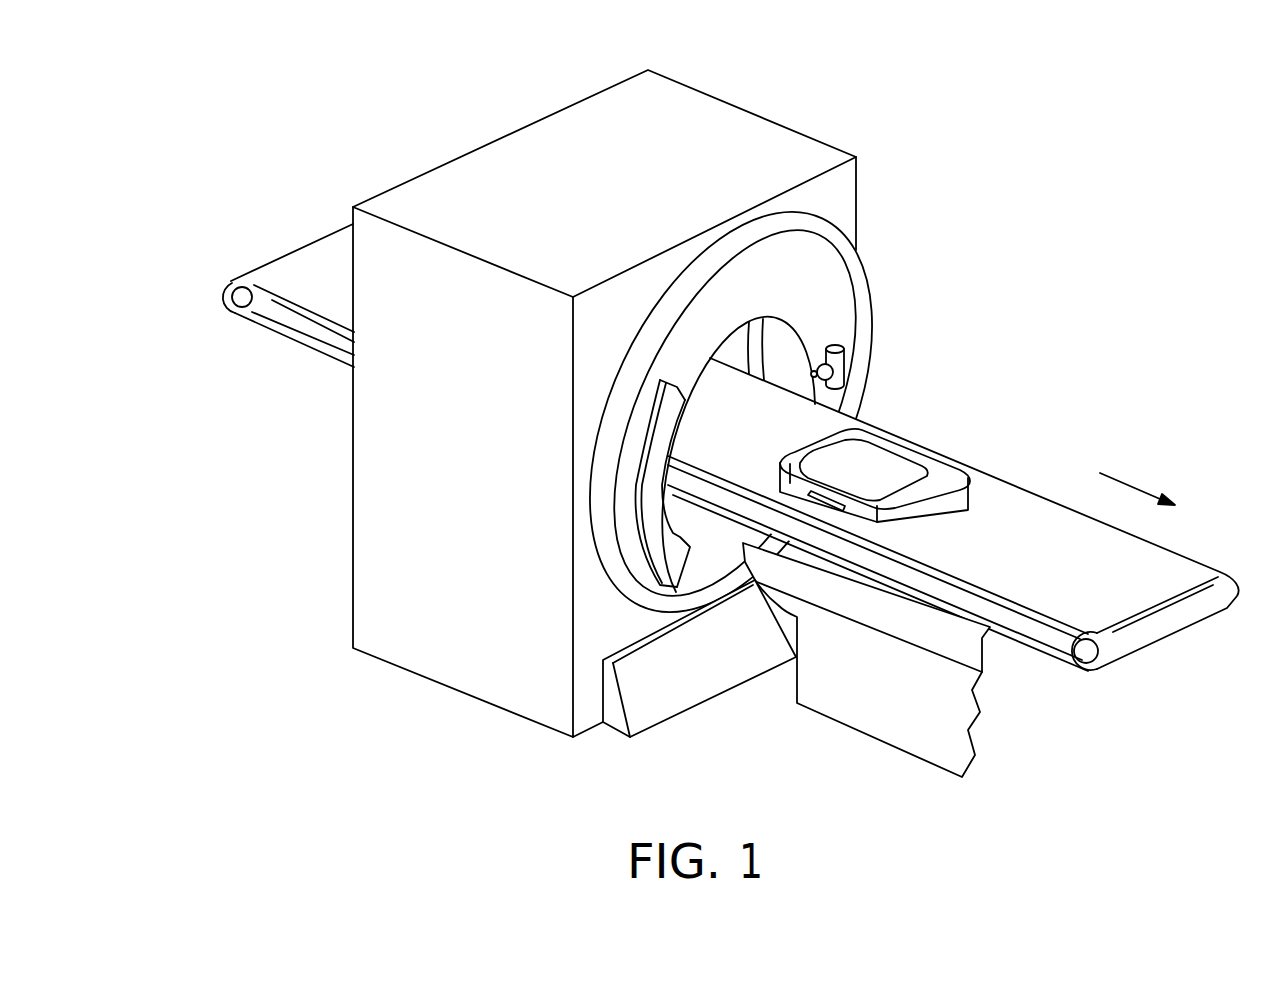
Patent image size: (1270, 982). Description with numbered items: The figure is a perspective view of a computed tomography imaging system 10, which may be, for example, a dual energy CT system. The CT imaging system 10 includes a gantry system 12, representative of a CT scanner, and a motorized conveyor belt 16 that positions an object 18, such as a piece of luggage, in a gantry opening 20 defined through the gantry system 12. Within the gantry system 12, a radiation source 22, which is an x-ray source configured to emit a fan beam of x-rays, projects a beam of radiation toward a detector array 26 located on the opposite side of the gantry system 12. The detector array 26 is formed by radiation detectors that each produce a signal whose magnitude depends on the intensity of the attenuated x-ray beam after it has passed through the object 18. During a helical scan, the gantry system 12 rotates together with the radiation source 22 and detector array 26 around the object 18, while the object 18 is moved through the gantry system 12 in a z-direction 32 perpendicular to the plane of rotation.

The CT imaging system 10 is at (731, 438).
The gantry system 12 is at (830, 278).
The motorized conveyor belt 16 is at (955, 613).
The object 18 is at (883, 467).
The gantry opening 20 is at (715, 356).
The radiation source 22 is at (836, 365).
The detector array 26 is at (648, 507).
The z-direction 32 is at (1128, 472).